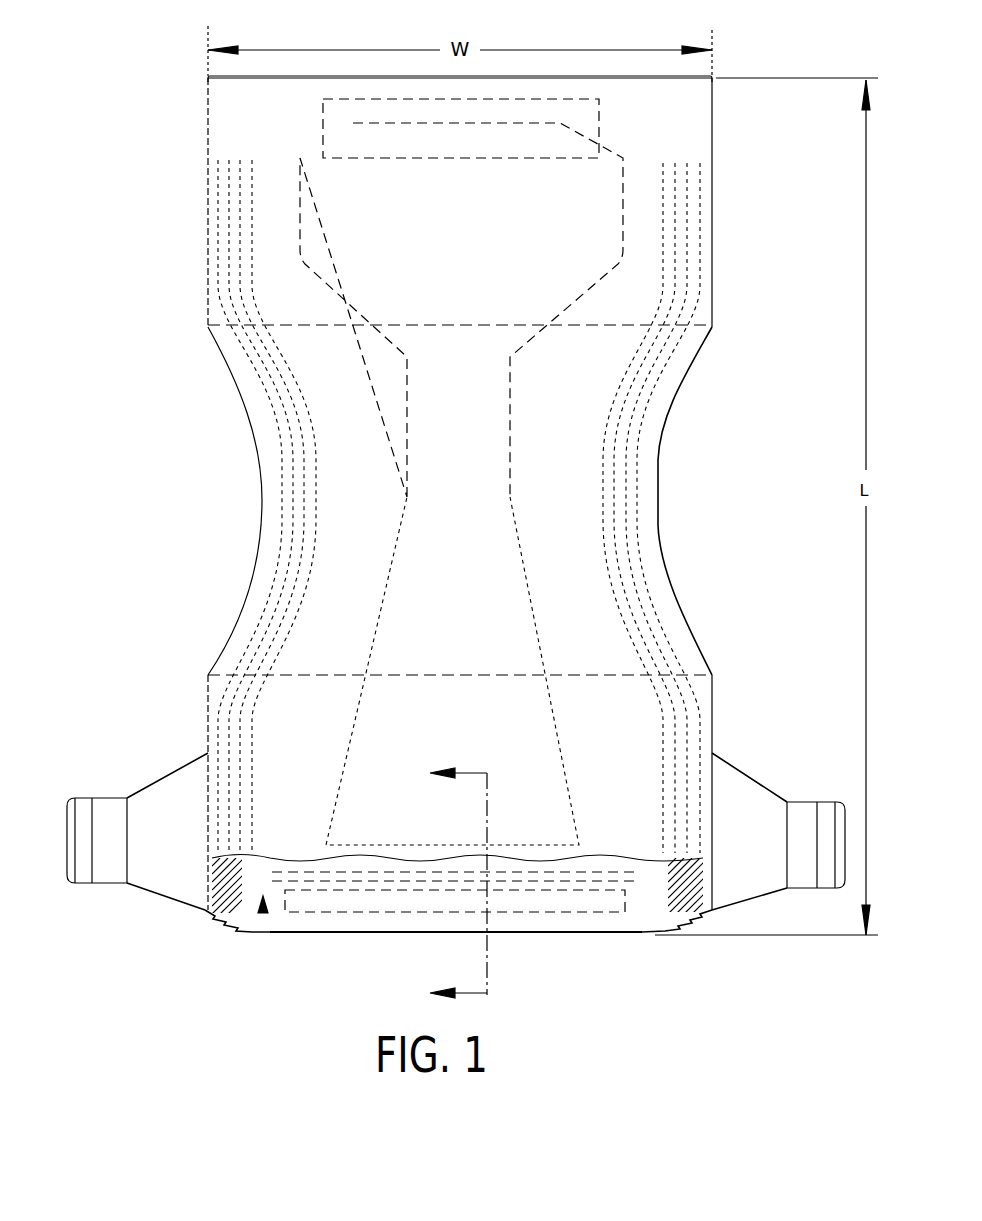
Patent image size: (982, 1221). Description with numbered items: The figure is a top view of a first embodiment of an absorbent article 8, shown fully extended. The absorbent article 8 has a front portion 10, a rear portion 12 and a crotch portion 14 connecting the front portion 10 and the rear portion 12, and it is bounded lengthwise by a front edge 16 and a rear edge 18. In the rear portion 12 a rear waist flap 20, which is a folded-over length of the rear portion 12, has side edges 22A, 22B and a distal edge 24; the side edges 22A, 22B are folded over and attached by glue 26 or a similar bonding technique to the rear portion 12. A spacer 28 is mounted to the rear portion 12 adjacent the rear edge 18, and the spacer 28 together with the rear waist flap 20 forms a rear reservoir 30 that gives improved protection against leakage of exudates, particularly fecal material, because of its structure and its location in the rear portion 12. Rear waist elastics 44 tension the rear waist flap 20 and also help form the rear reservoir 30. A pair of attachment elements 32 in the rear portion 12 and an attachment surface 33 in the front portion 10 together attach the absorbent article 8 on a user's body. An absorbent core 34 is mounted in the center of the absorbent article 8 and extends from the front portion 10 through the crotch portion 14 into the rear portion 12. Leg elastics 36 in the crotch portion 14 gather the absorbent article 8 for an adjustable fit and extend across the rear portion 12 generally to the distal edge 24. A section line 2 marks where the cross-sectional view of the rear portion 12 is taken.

The absorbent article 8 is at (112, 40).
The front portion 10 is at (122, 126).
The rear portion 12 is at (113, 757).
The crotch portion 14 is at (97, 463).
The front edge 16 is at (670, 81).
The rear edge 18 is at (555, 932).
The rear waist flap 20 is at (260, 938).
The side edge 22A is at (220, 918).
The side edge 22B is at (692, 900).
The distal edge 24 is at (290, 852).
The glue 26 is at (220, 878).
The spacer 28 is at (592, 905).
The rear reservoir 30 is at (313, 863).
The attachment elements 32 is at (150, 878).
The attachment surface 33 is at (332, 118).
The absorbent core 34 is at (597, 198).
The leg elastics 36 is at (290, 510).
The rear waist elastics 44 is at (600, 858).
The section line 2— 2 is at (448, 883).